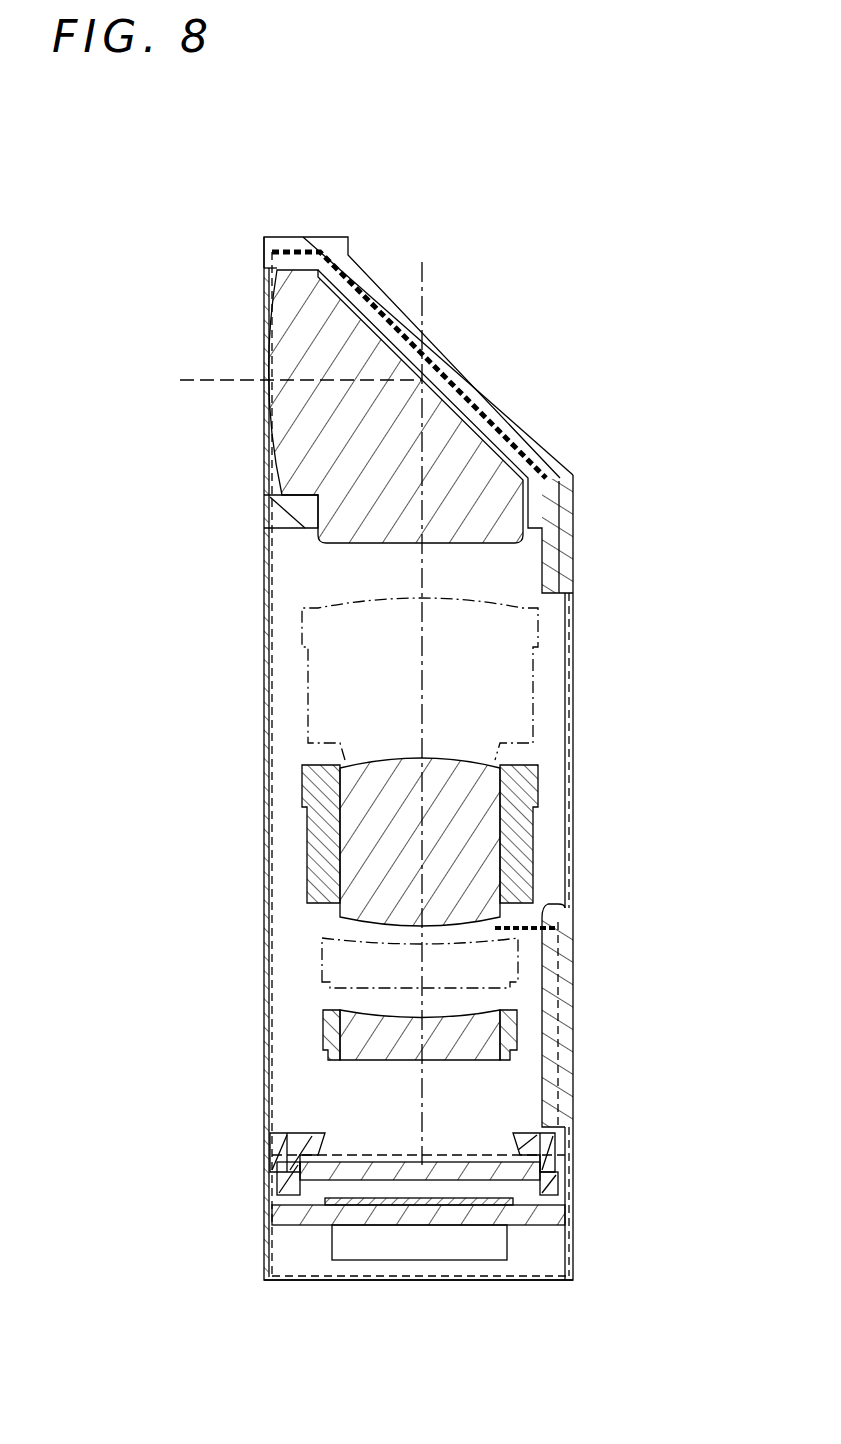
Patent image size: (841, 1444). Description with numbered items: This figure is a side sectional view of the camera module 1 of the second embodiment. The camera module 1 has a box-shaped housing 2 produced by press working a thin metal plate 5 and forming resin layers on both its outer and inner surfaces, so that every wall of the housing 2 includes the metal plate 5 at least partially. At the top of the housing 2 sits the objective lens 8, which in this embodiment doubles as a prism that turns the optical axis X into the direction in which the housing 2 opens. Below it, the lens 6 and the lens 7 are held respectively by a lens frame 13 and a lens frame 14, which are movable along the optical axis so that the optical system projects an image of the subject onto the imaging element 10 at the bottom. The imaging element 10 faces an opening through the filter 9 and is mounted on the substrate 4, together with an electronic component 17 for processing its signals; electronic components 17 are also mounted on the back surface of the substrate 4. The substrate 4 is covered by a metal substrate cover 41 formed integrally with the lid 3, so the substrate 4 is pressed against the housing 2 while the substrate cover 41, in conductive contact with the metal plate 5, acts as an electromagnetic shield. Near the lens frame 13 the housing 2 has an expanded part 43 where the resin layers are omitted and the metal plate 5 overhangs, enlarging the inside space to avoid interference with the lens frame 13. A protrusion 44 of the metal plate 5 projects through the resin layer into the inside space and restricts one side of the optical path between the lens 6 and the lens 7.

The camera module 1 is at (433, 215).
The housing 2 is at (288, 237).
The lid 3 is at (264, 722).
The substrate 4 is at (567, 1215).
The metal plate 5 is at (433, 369).
The lens 6 is at (470, 770).
The lens 7 is at (452, 1017).
The objective lens 8 is at (275, 320).
The filter 9 is at (470, 1160).
The imaging element 10 is at (487, 1198).
The lens frame 13 is at (535, 845).
The lens frame 14 is at (517, 1037).
The electronic component 17 is at (500, 1247).
The substrate cover 41 is at (420, 1282).
The expanded part 43 is at (578, 655).
The protrusion 44 is at (523, 932).